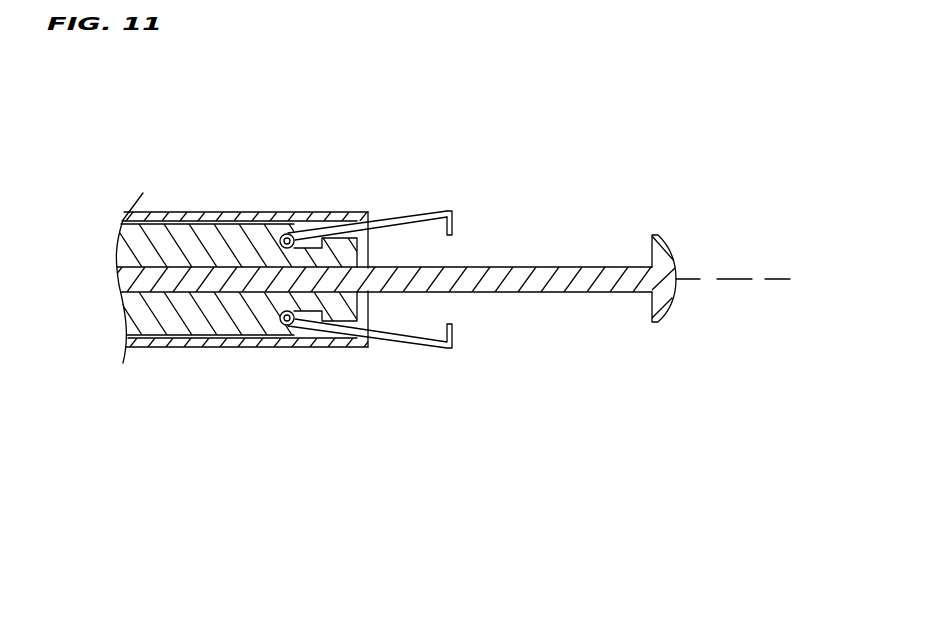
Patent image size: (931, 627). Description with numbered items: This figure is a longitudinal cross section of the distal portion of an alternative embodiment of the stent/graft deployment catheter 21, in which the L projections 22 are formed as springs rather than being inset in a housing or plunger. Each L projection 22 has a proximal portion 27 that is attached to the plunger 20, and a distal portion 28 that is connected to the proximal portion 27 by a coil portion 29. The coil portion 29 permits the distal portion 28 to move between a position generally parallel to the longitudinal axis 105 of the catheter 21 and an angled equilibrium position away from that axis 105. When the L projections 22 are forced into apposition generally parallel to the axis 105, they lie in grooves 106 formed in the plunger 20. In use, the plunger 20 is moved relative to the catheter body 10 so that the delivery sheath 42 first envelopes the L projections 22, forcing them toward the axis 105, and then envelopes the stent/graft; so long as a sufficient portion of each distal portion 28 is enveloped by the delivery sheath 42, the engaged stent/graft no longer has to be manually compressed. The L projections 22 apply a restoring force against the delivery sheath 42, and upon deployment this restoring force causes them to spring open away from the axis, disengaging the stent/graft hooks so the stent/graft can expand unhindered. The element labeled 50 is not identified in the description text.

The catheter body 10 is at (178, 215).
The plunger 20 is at (172, 340).
The stent/graft deployment catheter 21 is at (158, 190).
The L projection 22 is at (395, 213).
The proximal portion 27 is at (310, 322).
The distal portion 28 is at (432, 213).
The coil portion 29 is at (257, 213).
The delivery sheath 42 is at (330, 213).
The plunger head 50 is at (668, 247).
The longitudinal axis 105 is at (728, 280).
The groove 106 is at (343, 327).